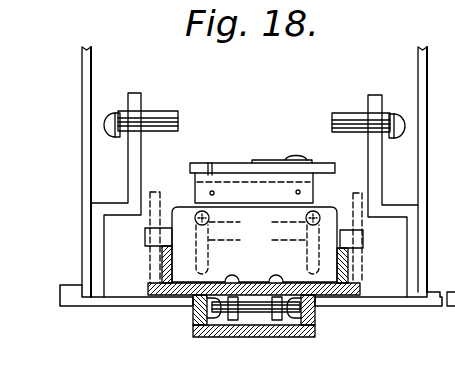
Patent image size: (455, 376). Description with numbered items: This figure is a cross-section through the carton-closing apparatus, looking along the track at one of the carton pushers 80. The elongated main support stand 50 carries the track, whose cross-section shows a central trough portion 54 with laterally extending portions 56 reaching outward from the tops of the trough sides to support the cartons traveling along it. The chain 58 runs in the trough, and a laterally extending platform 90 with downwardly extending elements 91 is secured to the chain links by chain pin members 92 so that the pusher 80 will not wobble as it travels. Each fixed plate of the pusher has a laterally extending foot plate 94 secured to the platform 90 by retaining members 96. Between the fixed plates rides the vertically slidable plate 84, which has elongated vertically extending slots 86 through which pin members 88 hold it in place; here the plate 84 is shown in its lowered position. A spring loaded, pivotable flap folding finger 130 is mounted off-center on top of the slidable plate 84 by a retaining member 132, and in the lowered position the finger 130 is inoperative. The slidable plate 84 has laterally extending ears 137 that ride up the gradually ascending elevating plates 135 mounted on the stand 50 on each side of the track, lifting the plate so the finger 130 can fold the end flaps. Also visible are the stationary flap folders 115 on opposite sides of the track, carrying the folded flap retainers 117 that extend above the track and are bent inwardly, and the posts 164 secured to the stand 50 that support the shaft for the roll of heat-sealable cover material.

The main support stand 50 is at (113, 306).
The trough portion 54 is at (317, 319).
The laterally extending portions 56 is at (166, 296).
The chain 58 is at (260, 321).
The carton pusher 80 is at (330, 270).
The vertically slidable plate 84 is at (180, 213).
The elongated vertically extending slots 86 is at (257, 241).
The pin members 88 is at (257, 221).
The laterally extending platform 90 is at (255, 335).
The downwardly extending elements 91 is at (230, 320).
The chain pin members 92 is at (296, 320).
The foot plate 94 is at (227, 281).
The retaining members 96 is at (238, 278).
The flap folder 115 is at (134, 96).
The folded flap retainer 117 is at (163, 115).
The flap folding finger 130 is at (203, 163).
The retaining member 132 is at (296, 157).
The elevating plate 135 is at (358, 198).
The laterally extending ears 137 is at (146, 236).
The posts 164 is at (82, 62).